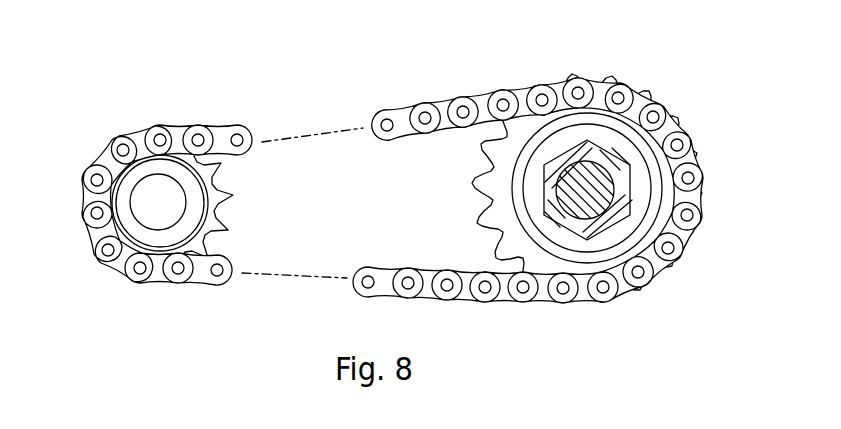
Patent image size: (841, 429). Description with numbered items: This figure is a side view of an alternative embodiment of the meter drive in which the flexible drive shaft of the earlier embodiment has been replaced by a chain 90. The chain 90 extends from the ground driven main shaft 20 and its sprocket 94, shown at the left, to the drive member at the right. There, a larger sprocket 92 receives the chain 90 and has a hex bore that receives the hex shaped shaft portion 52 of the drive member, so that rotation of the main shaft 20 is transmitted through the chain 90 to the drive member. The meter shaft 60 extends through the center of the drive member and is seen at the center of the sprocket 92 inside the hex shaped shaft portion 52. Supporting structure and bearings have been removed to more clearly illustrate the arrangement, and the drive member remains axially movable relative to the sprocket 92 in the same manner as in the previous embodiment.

The main shaft 20 is at (155, 200).
The hex shaped shaft portion 52 is at (623, 213).
The meter shaft 60 is at (612, 186).
The chain 90 is at (452, 110).
The sprocket 92 is at (495, 185).
The sprocket 94 is at (231, 196).